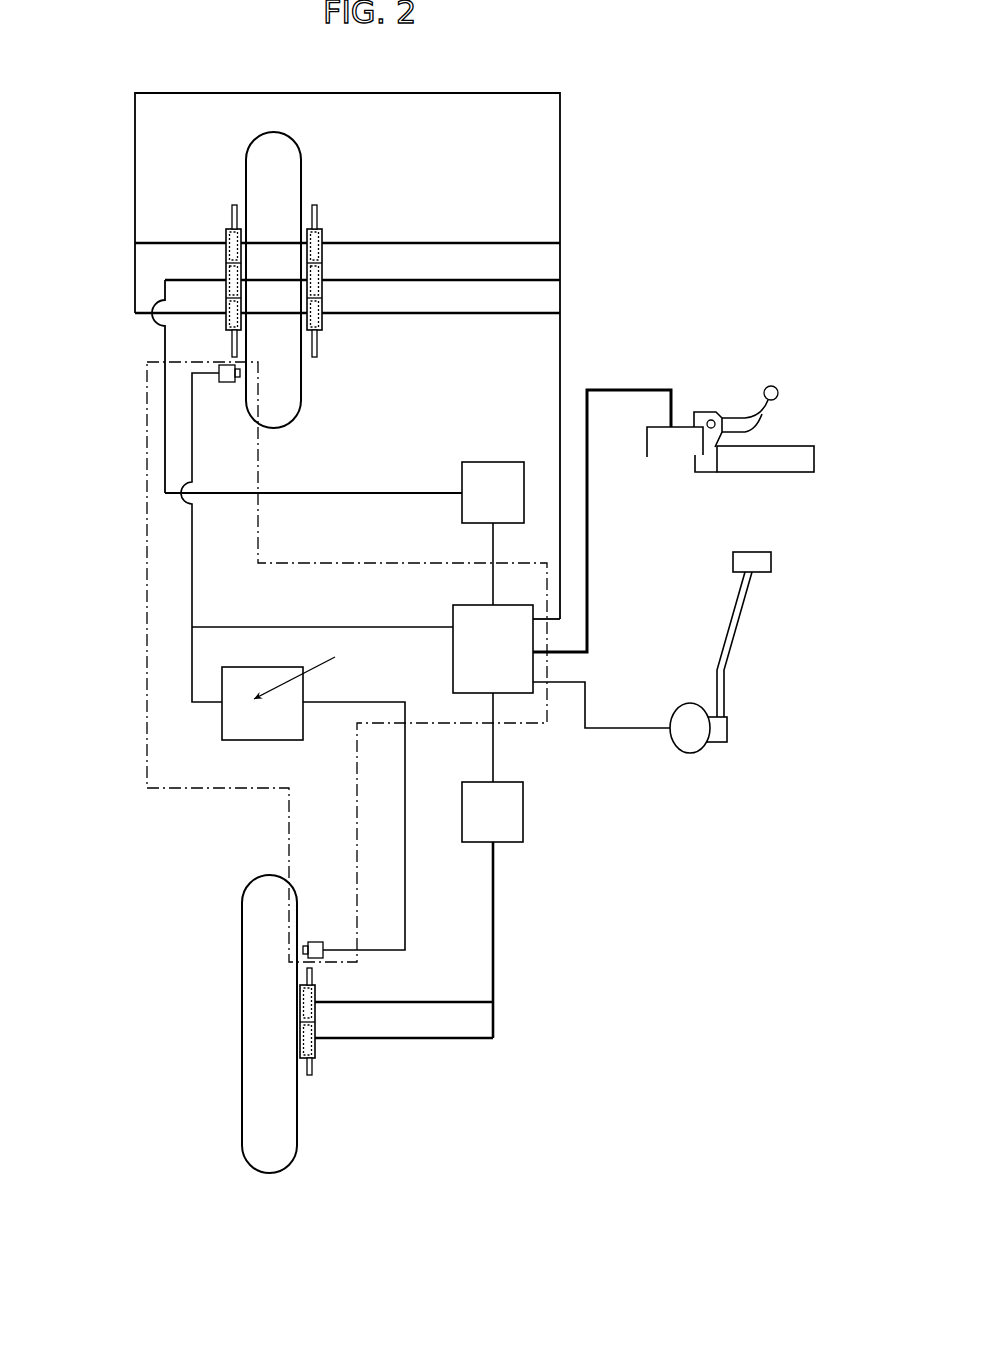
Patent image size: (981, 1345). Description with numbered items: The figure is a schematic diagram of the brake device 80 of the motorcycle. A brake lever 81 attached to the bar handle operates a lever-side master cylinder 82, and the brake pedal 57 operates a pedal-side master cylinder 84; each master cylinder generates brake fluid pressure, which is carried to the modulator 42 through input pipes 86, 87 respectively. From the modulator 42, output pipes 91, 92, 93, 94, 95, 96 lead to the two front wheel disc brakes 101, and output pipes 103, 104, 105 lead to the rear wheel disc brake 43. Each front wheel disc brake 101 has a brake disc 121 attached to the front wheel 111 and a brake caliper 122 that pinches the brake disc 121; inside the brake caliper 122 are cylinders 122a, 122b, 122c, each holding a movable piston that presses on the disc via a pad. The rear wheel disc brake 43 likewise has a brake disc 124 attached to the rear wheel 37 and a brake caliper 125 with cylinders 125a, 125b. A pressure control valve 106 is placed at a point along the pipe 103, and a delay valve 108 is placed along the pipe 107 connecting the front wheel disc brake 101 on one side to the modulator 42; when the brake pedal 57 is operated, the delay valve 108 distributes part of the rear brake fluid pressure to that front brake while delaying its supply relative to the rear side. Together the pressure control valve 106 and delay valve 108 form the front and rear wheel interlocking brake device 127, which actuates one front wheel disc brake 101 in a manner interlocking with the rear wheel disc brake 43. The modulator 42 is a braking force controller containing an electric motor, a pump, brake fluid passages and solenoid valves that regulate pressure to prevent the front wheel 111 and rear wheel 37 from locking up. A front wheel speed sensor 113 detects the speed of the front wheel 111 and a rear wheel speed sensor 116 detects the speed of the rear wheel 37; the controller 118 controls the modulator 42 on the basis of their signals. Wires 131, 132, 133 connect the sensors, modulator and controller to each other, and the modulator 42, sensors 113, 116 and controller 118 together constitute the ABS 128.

The brake device 80 is at (723, 160).
The pipe 91 is at (560, 163).
The pipe 92 is at (485, 241).
The pipe 93 is at (522, 278).
The pipe 94 is at (475, 316).
The pipe 95 is at (134, 242).
The pipe 96 is at (151, 307).
The front wheel disc brake 101 is at (224, 228).
The brake disc 121 is at (232, 204).
The brake caliper 122 is at (225, 292).
The cylinder 122a is at (224, 266).
The cylinder 122b is at (225, 320).
The cylinder 122c is at (223, 333).
The front wheel 111 is at (292, 424).
The front wheel speed sensor 113 is at (230, 386).
The pipe 107 is at (305, 496).
The delay valve 108 is at (497, 460).
The wire 131 is at (192, 565).
The wire 133 is at (345, 625).
The modulator 42 is at (452, 615).
The ABS 128 is at (147, 660).
The controller 118 is at (220, 722).
The wire 132 is at (405, 770).
The rear wheel speed sensor 116 is at (318, 940).
The brake caliper 125 is at (318, 989).
The pipe 104 is at (445, 1000).
The pipe 103 is at (493, 938).
The front and rear wheel interlocking brake device 127 is at (510, 850).
The pressure control valve 106 is at (523, 812).
The pipe 87 is at (627, 733).
The pedal-side master cylinder 84 is at (690, 754).
The pipe 86 is at (625, 388).
The brake lever 81 is at (752, 400).
The lever-side master cylinder 82 is at (670, 458).
The brake pedal 57 is at (740, 632).
The rear wheel 37 is at (241, 1020).
The cylinder 125a is at (318, 1012).
The cylinder 125b is at (318, 1032).
The rear wheel disc brake 43 is at (318, 1056).
The brake disc 124 is at (312, 1077).
The pipe 105 is at (465, 1040).